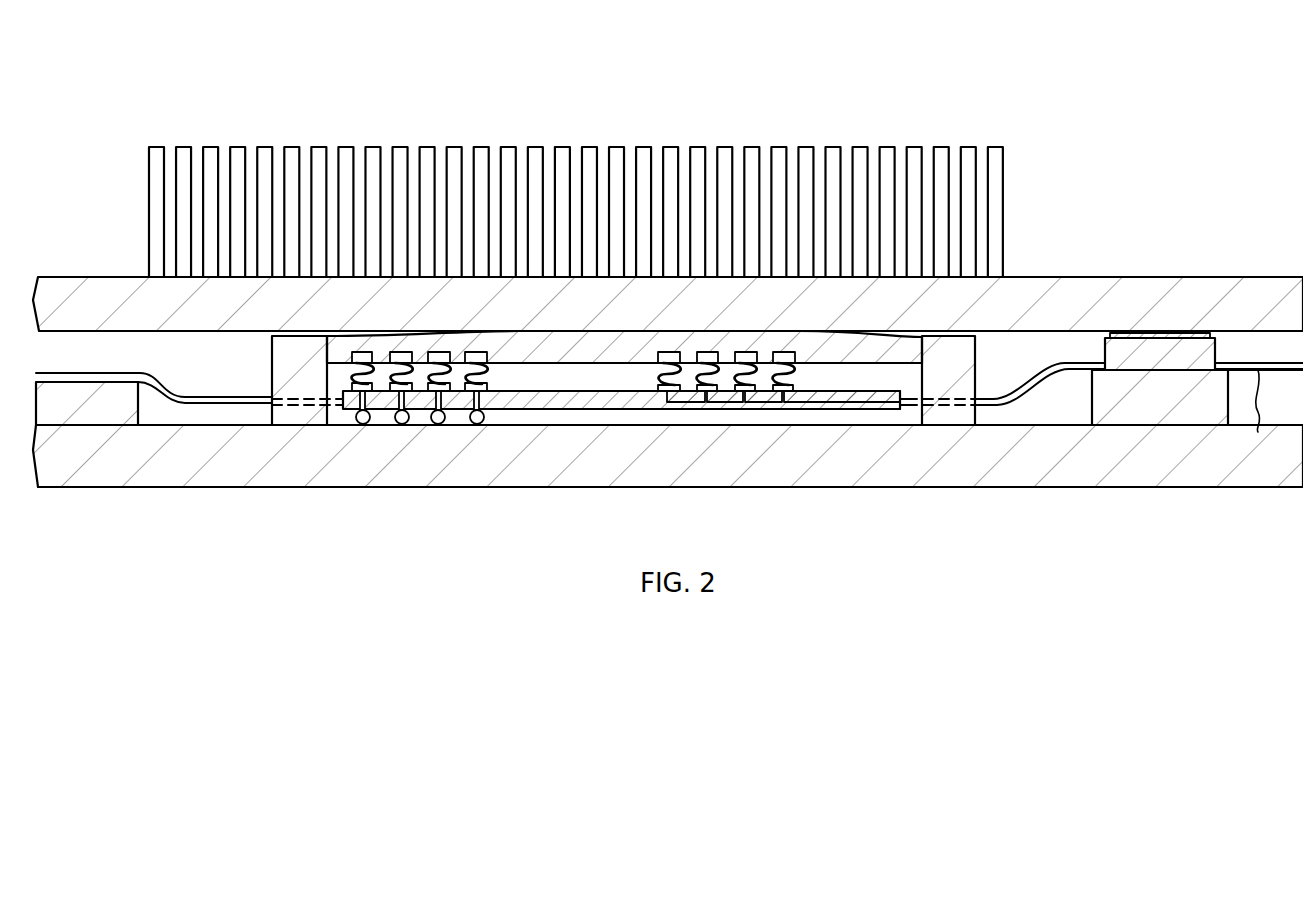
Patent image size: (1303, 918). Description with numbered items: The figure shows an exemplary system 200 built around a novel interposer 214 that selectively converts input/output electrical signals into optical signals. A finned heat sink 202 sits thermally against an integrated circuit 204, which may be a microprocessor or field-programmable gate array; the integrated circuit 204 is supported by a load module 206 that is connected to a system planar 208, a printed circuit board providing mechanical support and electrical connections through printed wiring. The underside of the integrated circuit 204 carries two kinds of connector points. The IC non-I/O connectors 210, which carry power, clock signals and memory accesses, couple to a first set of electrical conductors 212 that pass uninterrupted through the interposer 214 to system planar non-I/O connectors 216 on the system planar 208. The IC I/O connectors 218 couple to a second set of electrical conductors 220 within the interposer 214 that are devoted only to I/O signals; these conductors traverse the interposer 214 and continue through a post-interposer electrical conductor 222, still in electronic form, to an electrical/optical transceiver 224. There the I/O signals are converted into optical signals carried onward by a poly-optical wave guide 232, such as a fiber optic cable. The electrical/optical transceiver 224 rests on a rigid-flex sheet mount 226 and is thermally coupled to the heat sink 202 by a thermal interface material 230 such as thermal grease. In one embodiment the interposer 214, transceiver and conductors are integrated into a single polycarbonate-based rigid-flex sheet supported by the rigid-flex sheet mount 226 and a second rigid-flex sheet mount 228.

The system 200 is at (223, 89).
The heat sink 202 is at (136, 316).
The integrated circuit 204 is at (530, 345).
The load module 206 is at (287, 416).
The system planar 208 is at (721, 471).
The IC non-I/O connectors 210 is at (346, 376).
The first set of electrical conductors 212 is at (492, 401).
The interposer 214 is at (607, 401).
The system planar non-I/O connectors 216 is at (343, 428).
The IC I/O connectors 218 is at (656, 374).
The second set of electrical conductors 220 is at (811, 409).
The post-interposer electrical conductor 222 is at (1035, 388).
The electrical/optical transceiver 224 is at (1187, 357).
The rigid-flex sheet mount 226 is at (1180, 412).
The rigid-flex sheet mount 228 is at (105, 416).
The thermal interface material 230 is at (1133, 335).
The poly-optical wave guide 232 is at (1265, 419).